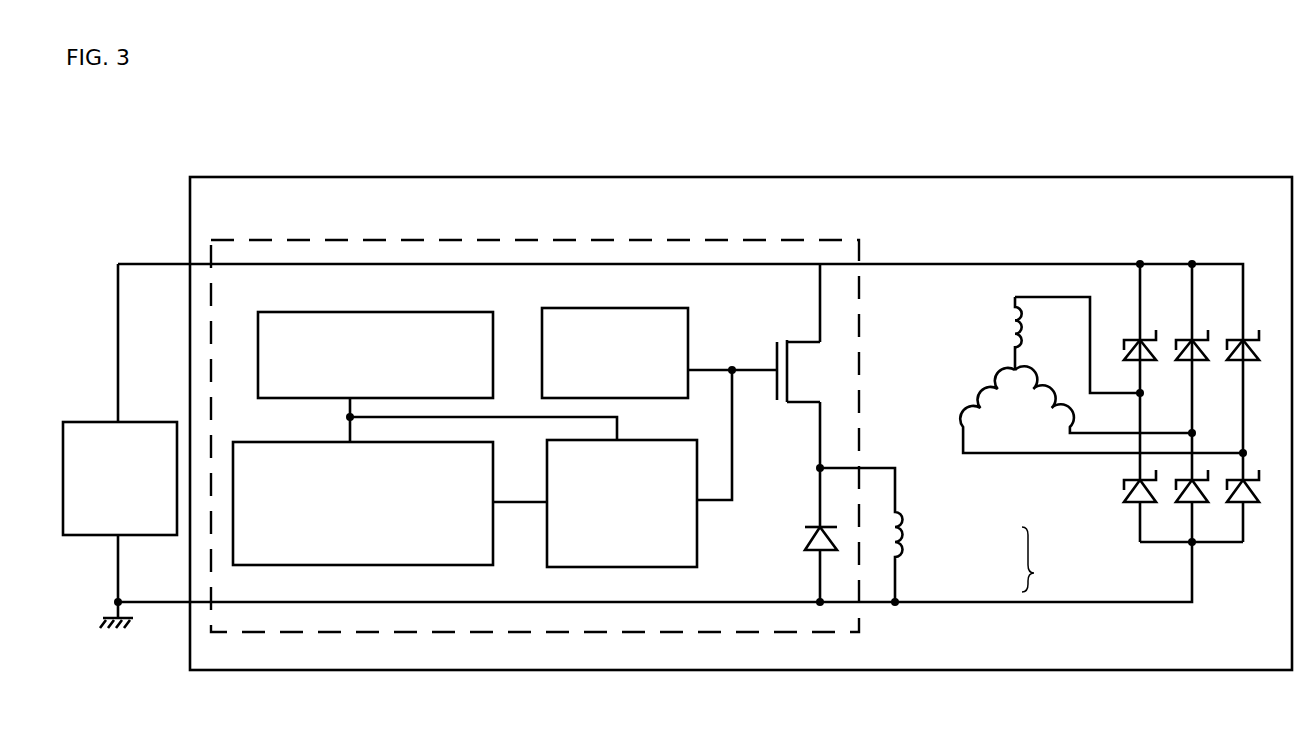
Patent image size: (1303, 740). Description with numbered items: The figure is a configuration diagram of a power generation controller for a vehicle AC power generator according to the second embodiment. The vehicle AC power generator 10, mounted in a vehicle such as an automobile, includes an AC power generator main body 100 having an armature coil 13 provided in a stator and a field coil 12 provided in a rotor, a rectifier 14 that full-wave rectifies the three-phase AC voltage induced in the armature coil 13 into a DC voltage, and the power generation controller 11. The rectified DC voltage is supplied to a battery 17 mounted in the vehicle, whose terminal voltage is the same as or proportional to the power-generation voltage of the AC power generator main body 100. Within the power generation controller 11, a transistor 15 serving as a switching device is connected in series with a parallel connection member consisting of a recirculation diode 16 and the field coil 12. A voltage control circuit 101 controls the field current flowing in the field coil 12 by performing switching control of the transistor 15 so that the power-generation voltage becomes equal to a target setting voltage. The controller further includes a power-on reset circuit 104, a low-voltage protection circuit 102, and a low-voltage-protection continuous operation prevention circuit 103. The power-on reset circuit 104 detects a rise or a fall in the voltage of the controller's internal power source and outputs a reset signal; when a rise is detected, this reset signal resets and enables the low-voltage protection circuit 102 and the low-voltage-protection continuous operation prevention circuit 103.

The vehicle AC power generator 10 is at (640, 177).
The power generation controller 11 is at (745, 238).
The field coil 12 is at (910, 550).
The armature coil 13 is at (993, 458).
The rectifier 14 is at (1222, 555).
The transistor 15 is at (801, 339).
The recirculation diode 16 is at (808, 524).
The battery 17 is at (85, 425).
The AC power generator main body 100 is at (1087, 583).
The voltage control circuit 101 is at (637, 308).
The low-voltage protection circuit 102 is at (665, 567).
The low-voltage-protection continuous operation prevention circuit 103 is at (443, 565).
The power-on reset circuit 104 is at (373, 312).